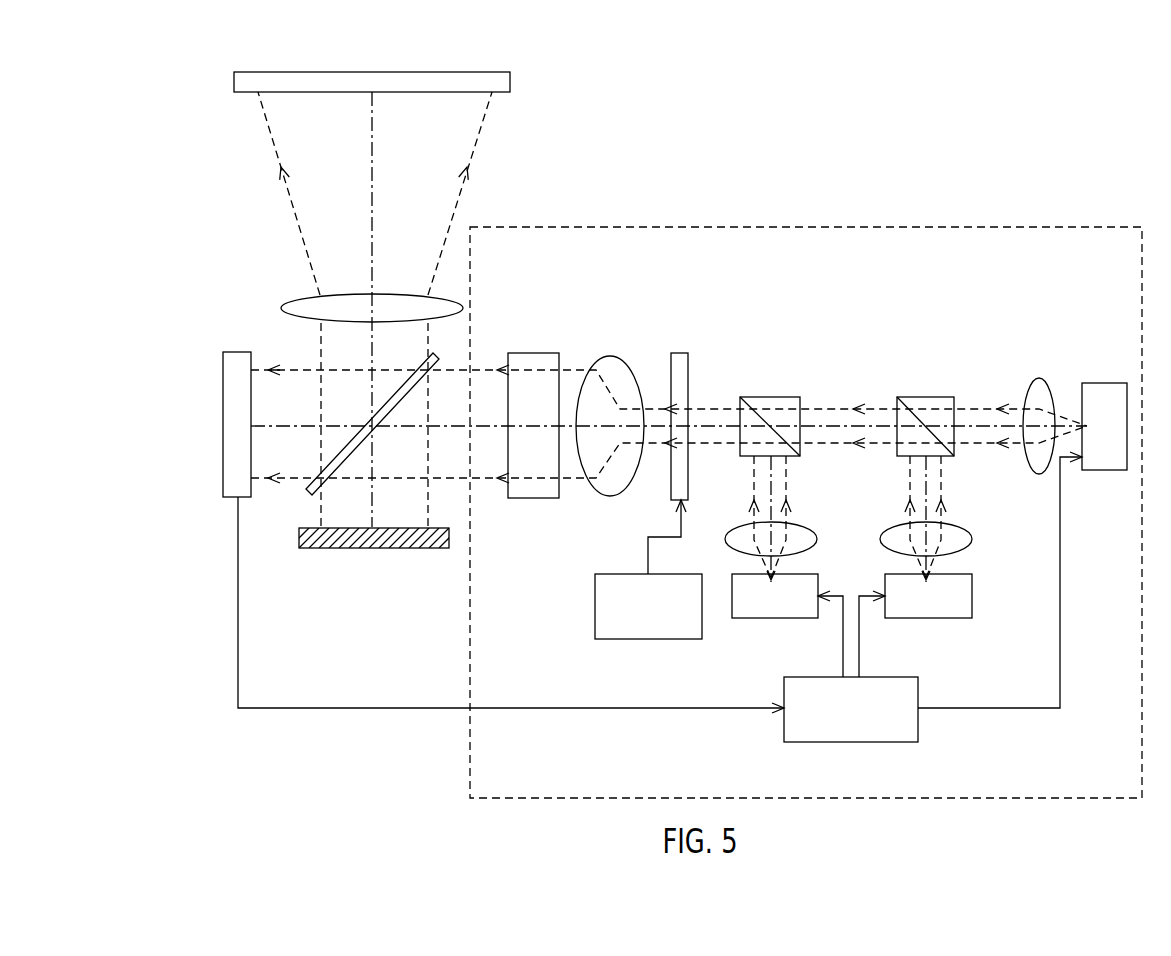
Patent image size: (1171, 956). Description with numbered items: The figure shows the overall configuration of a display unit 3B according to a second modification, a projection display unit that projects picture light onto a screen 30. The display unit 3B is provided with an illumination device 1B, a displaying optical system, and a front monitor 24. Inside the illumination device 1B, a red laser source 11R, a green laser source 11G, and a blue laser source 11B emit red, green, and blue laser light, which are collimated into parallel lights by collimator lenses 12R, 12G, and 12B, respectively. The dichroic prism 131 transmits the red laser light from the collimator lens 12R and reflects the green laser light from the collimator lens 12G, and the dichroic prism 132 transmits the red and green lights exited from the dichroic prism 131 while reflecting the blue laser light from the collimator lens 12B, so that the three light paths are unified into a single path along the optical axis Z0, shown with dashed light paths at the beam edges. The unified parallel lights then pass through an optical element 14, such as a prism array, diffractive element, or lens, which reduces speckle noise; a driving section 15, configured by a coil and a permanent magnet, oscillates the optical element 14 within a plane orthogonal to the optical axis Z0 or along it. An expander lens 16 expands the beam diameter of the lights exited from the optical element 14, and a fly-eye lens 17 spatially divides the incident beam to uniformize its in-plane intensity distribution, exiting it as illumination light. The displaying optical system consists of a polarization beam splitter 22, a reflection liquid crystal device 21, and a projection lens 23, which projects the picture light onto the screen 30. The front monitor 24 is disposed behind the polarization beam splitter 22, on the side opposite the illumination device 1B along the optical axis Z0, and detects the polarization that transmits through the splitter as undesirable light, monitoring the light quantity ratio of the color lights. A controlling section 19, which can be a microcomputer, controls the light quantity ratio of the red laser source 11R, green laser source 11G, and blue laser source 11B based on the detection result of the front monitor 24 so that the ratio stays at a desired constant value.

The screen 30 is at (512, 82).
The projection lens 23 is at (283, 307).
The front monitor 24 is at (223, 422).
The polarization beam splitter 22 is at (304, 488).
The reflection liquid crystal device 21 is at (346, 548).
The fly-eye lens 17 is at (537, 353).
The expander lens 16 is at (609, 496).
The optical element 14 is at (678, 353).
The optical axis Z0 is at (714, 428).
The dichroic prism 132 is at (771, 397).
The dichroic prism 131 is at (922, 397).
The collimator lens 12R is at (1038, 378).
The red laser source 11R is at (1107, 470).
The collimator lens 12B is at (811, 525).
The blue laser source 11B is at (773, 618).
The collimator lens 12G is at (974, 539).
The green laser source 11G is at (963, 618).
The driving section 15 is at (648, 639).
The controlling section 19 is at (851, 742).
The illumination device 1B is at (749, 225).
The display unit 3B is at (1095, 154).